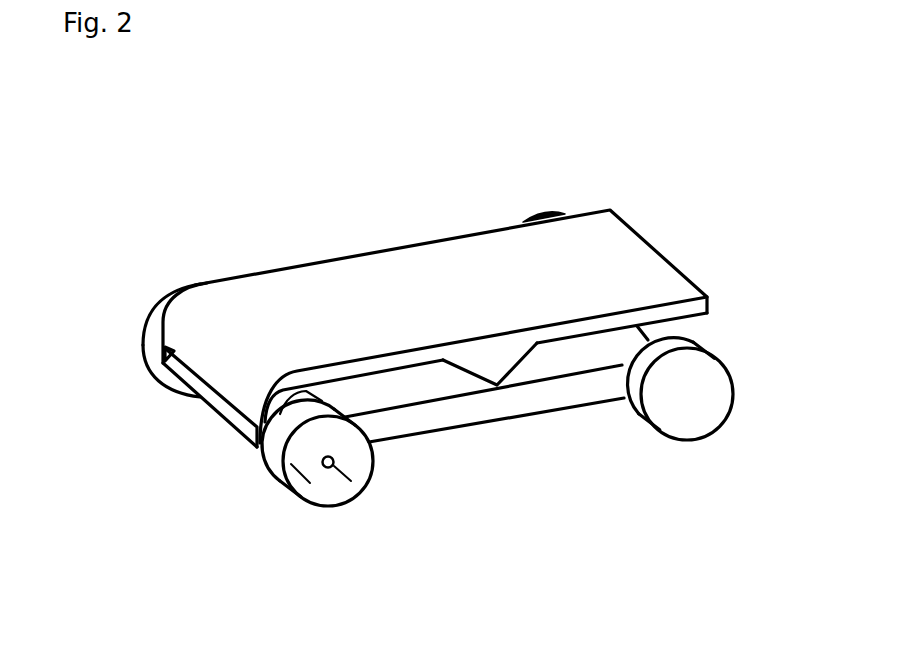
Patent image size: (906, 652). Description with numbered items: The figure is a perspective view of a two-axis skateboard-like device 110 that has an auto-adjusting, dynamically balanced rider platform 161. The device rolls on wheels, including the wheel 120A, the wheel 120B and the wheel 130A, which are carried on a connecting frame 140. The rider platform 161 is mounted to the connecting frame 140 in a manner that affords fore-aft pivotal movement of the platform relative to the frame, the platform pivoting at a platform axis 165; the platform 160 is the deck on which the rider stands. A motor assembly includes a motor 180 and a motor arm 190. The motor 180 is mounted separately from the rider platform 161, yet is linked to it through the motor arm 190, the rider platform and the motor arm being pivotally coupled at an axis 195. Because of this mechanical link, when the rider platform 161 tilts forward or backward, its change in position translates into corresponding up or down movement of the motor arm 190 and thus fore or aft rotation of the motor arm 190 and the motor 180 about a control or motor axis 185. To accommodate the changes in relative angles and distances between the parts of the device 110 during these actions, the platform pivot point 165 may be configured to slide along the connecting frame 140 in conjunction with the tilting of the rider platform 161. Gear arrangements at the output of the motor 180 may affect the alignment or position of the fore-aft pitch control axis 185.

The two-axis skateboard-like device 110 is at (213, 208).
The wheel 120A is at (352, 496).
The second front wheel 120B is at (140, 347).
The rear wheel 130A is at (718, 426).
The connecting frame 140 is at (453, 427).
The top plate 160 is at (474, 211).
The rider platform 161 is at (494, 299).
The platform axis 165 is at (343, 247).
The motor 180 is at (237, 452).
The motor axis 185 is at (147, 300).
The motor arm 190 is at (217, 405).
The axis 195 is at (137, 327).